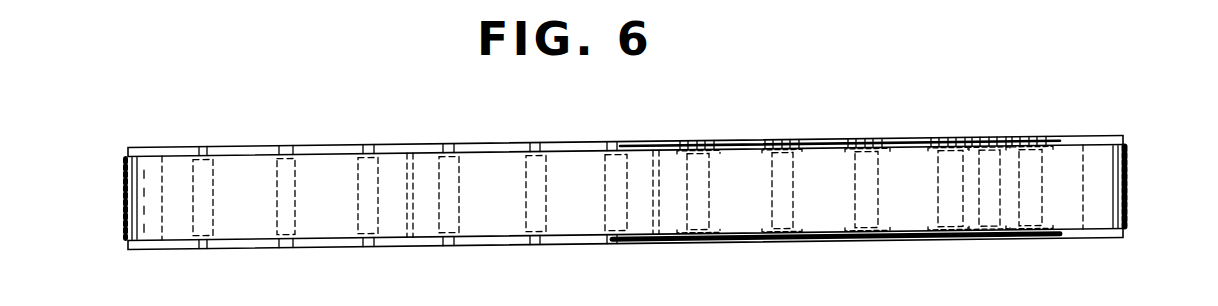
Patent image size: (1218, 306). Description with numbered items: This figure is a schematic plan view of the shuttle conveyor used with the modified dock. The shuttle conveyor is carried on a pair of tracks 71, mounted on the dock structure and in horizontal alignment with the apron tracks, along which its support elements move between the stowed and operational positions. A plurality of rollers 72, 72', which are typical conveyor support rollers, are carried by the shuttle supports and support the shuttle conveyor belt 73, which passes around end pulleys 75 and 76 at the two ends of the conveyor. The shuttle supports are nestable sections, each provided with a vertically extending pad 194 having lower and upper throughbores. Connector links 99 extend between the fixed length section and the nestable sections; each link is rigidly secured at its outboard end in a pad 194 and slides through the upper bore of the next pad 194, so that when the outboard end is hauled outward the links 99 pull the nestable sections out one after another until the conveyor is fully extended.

The tracks 71 is at (1085, 137).
The rollers 72 is at (426, 170).
The roller 72' is at (527, 223).
The shuttle conveyor belt 73 is at (168, 196).
The end pulley 75 is at (140, 177).
The end pulley 76 is at (1130, 188).
The connector links 99 is at (645, 146).
The vertically extending pad 194 is at (857, 142).